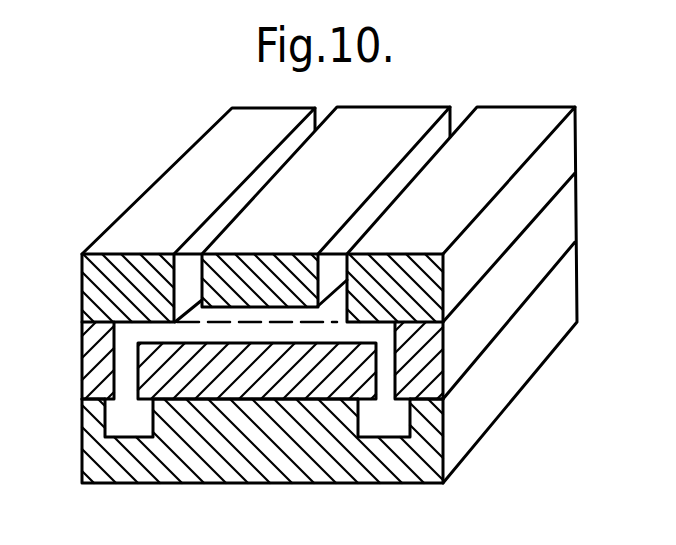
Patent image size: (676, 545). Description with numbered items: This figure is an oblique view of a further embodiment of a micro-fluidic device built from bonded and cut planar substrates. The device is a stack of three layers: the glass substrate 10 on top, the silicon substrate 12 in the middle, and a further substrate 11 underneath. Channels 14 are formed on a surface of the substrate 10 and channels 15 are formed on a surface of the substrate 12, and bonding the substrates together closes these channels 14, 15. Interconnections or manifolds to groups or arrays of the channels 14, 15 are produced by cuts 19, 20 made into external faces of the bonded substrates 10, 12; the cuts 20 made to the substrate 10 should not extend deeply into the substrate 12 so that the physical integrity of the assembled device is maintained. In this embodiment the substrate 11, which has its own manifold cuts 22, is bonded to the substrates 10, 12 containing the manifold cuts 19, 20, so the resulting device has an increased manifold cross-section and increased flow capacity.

The planar substrate 10 is at (100, 290).
The substrate 11 is at (98, 462).
The planar substrate 12 is at (120, 371).
The channels 14 is at (302, 313).
The channels 15 is at (160, 332).
The cuts 19 is at (105, 380).
The cuts 20 is at (425, 142).
The manifold cuts 22 is at (137, 423).